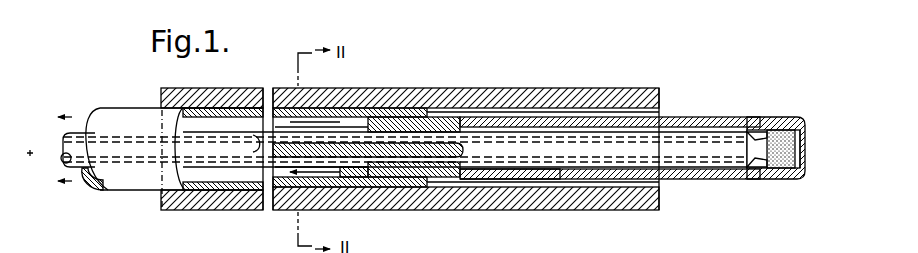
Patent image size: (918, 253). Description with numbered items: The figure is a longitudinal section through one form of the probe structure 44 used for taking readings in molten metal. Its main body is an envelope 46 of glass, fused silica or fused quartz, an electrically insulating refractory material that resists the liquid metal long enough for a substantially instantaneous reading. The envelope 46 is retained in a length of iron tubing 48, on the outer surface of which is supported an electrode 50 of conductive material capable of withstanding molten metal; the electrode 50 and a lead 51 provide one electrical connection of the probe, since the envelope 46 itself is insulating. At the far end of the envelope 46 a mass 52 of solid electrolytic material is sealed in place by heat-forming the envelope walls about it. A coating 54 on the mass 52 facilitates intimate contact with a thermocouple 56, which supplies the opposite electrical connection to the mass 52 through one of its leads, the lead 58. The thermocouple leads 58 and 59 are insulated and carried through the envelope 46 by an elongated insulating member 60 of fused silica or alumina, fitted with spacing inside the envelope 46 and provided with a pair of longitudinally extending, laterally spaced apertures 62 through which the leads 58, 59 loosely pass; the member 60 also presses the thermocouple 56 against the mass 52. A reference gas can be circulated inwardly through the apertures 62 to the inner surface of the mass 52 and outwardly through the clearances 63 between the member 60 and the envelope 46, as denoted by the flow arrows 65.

The probe structure 44 is at (660, 91).
The envelope 46 is at (680, 116).
The iron tubing 48 is at (325, 112).
The electrode 50 is at (483, 97).
The lead 51 is at (100, 228).
The mass of solid electrolytic material 52 is at (771, 136).
The coating 54 is at (756, 131).
The thermocouple 56 is at (762, 168).
The thermocouple lead 58 is at (60, 157).
The thermocouple lead 59 is at (55, 137).
The insulating member 60 is at (590, 152).
The apertures 62 is at (459, 140).
The clearances 63 is at (487, 176).
The flow arrows 65 is at (90, 175).